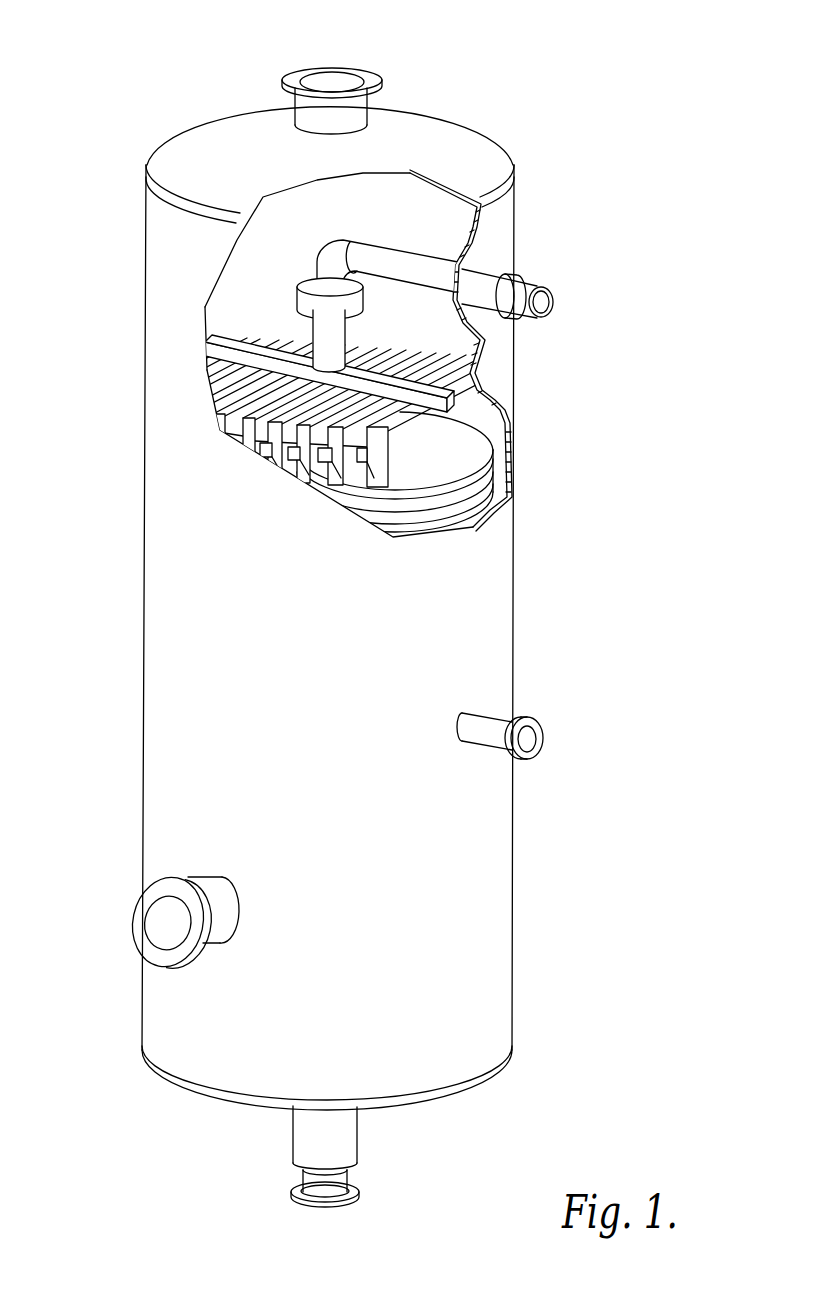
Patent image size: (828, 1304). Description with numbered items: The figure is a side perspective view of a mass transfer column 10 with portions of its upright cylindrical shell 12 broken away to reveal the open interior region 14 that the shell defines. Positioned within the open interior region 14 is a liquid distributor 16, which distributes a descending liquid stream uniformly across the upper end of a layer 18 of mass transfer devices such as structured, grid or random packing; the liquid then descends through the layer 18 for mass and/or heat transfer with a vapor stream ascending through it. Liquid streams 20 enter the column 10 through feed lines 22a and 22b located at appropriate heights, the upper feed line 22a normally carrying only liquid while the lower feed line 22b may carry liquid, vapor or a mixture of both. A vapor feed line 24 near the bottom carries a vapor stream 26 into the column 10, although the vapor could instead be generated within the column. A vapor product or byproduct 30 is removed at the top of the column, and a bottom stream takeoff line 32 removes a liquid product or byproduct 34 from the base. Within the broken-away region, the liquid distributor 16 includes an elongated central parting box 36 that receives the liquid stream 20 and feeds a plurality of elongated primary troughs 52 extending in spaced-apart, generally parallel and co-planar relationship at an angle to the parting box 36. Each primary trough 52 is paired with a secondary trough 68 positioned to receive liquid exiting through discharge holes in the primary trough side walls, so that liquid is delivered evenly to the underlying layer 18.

The mass transfer column 10 is at (433, 117).
The upright cylindrical shell 12 is at (478, 223).
The open interior region 14 is at (383, 210).
The liquid distributor 16 is at (263, 337).
The layer of mass transfer devices 18 is at (492, 458).
The liquid stream 20 is at (567, 307).
The feed line 22a is at (490, 283).
The feed line 22b is at (487, 728).
The vapor feed line 24 is at (205, 888).
The vapor stream 26 is at (177, 918).
The vapor product or byproduct 30 is at (332, 85).
The bottom stream takeoff line 32 is at (353, 1130).
The liquid product or byproduct 34 is at (323, 1210).
The elongated central parting box 36 is at (228, 340).
The primary trough 52 is at (378, 440).
The secondary trough 68 is at (363, 448).